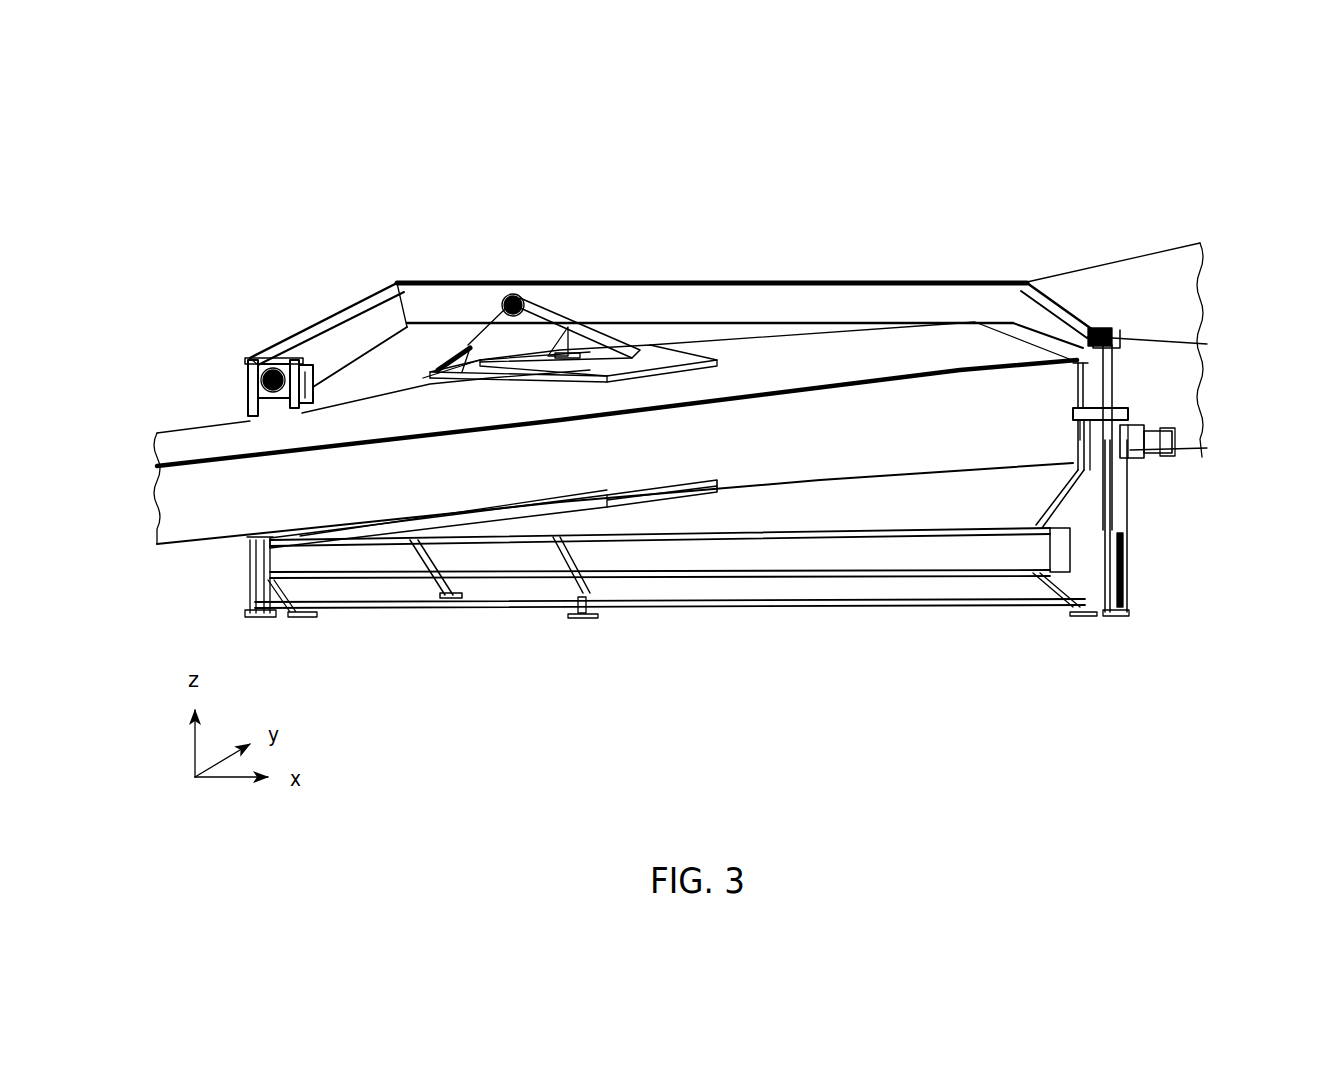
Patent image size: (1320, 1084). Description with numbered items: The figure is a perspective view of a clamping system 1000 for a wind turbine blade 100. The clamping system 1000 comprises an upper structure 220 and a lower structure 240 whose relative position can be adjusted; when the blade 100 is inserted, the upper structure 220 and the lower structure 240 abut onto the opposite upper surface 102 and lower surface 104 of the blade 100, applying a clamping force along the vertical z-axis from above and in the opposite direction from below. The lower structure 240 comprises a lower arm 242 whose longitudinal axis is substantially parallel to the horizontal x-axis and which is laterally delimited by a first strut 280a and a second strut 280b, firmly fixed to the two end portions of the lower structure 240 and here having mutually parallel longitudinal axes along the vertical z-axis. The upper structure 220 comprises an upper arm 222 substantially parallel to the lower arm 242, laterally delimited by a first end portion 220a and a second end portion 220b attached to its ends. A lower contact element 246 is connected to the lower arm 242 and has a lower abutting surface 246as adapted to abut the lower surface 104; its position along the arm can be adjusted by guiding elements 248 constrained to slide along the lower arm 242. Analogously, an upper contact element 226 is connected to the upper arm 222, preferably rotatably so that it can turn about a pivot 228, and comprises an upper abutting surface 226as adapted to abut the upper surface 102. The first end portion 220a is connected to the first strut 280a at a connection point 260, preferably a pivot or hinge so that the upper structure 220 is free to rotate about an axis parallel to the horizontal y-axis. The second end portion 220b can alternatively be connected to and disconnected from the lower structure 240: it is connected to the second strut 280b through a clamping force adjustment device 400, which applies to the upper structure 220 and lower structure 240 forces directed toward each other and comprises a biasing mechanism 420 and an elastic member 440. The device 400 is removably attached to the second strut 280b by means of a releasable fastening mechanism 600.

The clamping system 1000 is at (790, 184).
The wind turbine blade 100 is at (1152, 249).
The upper surface 102 is at (350, 422).
The lower surface 104 is at (905, 462).
The upper structure 220 is at (562, 270).
The upper arm 222 is at (703, 300).
The first end portion 220a is at (313, 345).
The second end portion 220b is at (1047, 315).
The upper contact element 226 is at (491, 350).
The upper abutting surface 226as is at (470, 343).
The pivot 228 is at (505, 296).
The connection point 260 is at (247, 368).
The first strut 280a is at (238, 405).
The second strut 280b is at (1140, 520).
The clamping force adjustment device 400 is at (1140, 400).
The biasing mechanism 420 is at (1070, 402).
The elastic member 440 is at (1075, 351).
The releasable fastening mechanism 600 is at (1150, 470).
The lower structure 240 is at (647, 645).
The lower arm 242 is at (780, 557).
The lower contact element 246 is at (532, 544).
The lower abutting surface 246as is at (470, 540).
The guiding elements 248 is at (453, 590).